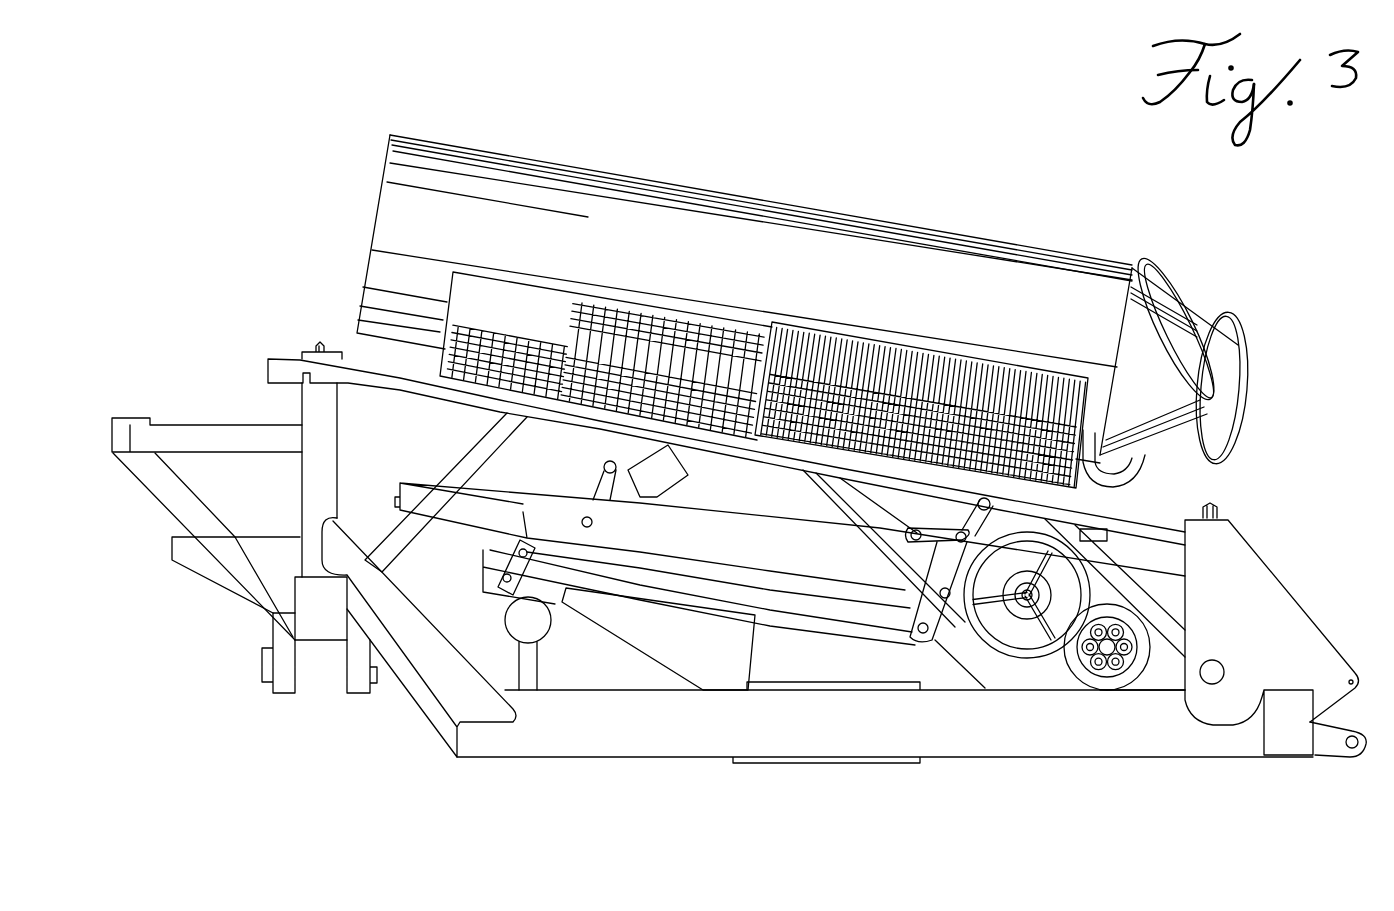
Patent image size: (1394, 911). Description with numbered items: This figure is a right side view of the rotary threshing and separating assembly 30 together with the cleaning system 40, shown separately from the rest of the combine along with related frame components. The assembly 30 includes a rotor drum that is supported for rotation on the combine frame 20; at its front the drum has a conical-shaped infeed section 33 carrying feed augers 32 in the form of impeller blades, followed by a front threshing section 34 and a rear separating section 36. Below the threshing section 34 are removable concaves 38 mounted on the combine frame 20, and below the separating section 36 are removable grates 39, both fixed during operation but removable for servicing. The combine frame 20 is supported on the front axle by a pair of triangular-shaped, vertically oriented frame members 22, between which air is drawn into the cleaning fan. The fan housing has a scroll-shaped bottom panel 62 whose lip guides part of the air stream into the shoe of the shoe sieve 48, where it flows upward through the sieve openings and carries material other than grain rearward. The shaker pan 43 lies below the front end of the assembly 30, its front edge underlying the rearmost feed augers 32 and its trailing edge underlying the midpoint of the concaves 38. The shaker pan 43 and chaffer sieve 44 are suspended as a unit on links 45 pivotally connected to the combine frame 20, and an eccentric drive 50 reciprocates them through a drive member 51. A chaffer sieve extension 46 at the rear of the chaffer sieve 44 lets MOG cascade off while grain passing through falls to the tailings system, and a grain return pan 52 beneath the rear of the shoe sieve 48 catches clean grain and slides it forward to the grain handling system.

The combine frame 20 is at (1195, 518).
The frame members 22 is at (1268, 634).
The rotary threshing and separating assembly 30 is at (1035, 238).
The feed augers 32 is at (1160, 265).
The infeed section 33 is at (1212, 318).
The threshing section 34 is at (1093, 278).
The separating section 36 is at (962, 260).
The concaves 38 is at (830, 312).
The grates 39 is at (637, 300).
The cleaning system 40 is at (640, 676).
The shaker pan 43 is at (878, 520).
The chaffer sieve 44 is at (402, 482).
The links 45 is at (598, 470).
The chaffer sieve extension 46 is at (463, 522).
The shoe sieve 48 is at (543, 602).
The eccentric drive 50 is at (1105, 556).
The drive member 51 is at (985, 650).
The grain return pan 52 is at (722, 652).
The bottom panel 62 is at (1162, 695).